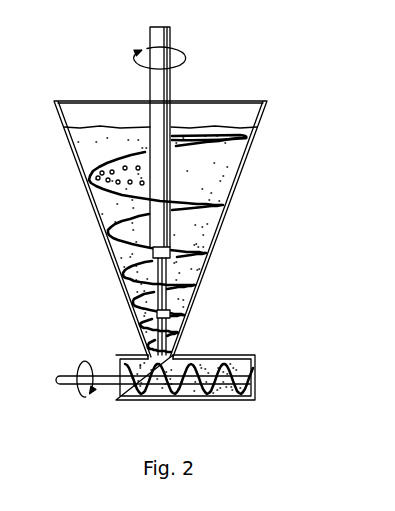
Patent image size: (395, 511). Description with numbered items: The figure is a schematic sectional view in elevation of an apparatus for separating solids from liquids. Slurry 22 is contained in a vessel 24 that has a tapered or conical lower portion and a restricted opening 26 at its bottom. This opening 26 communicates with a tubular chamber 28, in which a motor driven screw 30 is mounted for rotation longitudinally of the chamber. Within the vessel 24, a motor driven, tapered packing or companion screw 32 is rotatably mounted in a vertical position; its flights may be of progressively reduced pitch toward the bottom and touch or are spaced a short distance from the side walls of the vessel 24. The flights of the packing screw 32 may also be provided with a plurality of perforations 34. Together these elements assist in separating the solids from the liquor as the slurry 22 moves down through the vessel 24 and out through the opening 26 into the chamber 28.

The slurry 22 is at (222, 180).
The vessel 24 is at (262, 119).
The restricted opening 26 is at (174, 355).
The tubular chamber 28 is at (227, 400).
The motor driven screw 30 is at (110, 384).
The tapered packing screw 32 is at (172, 82).
The perforations 34 is at (122, 166).